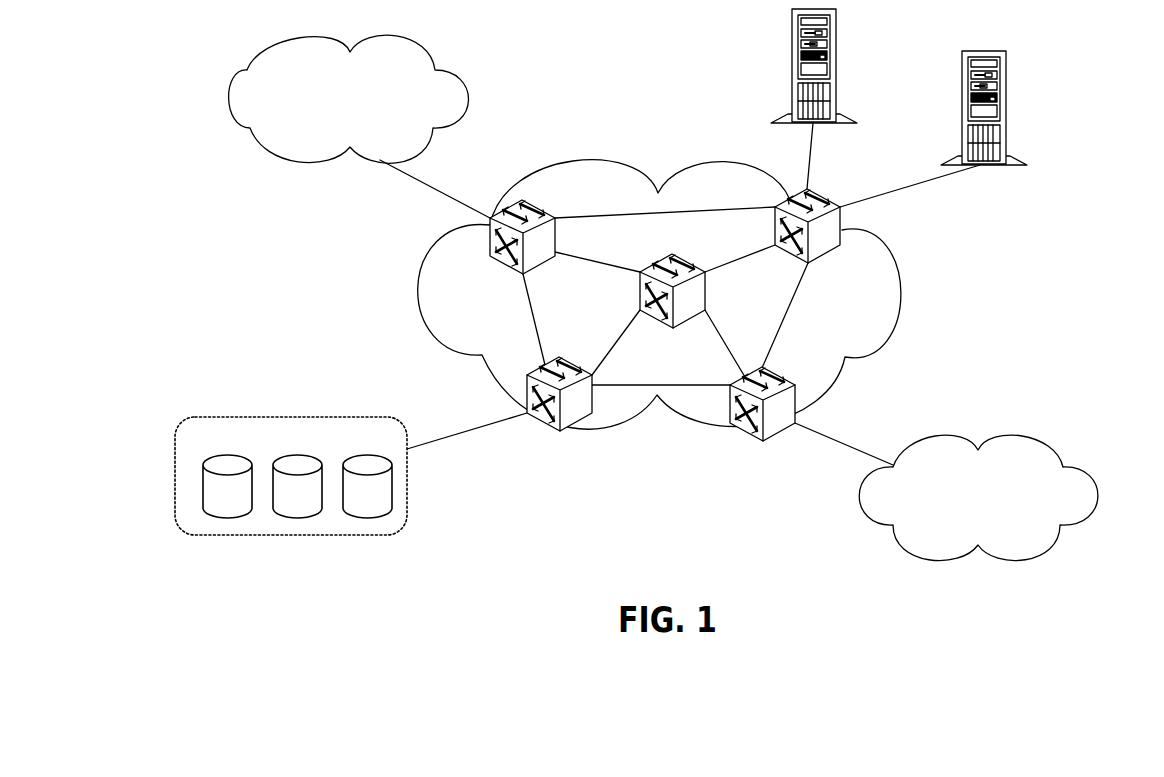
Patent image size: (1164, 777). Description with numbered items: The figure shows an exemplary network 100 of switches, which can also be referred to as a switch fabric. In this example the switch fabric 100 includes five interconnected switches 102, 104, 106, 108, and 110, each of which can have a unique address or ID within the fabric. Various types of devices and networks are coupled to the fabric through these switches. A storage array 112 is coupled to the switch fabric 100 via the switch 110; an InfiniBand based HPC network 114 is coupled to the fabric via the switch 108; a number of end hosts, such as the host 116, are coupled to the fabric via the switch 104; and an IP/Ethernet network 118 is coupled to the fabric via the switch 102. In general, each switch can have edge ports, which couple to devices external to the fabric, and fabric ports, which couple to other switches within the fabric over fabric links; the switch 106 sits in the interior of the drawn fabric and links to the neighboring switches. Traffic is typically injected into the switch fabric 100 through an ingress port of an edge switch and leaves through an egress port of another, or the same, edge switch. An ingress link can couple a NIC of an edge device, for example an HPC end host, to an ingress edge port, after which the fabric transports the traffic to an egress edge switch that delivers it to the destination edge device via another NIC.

The network 100 is at (902, 291).
The switch 102 is at (760, 442).
The switch 104 is at (845, 229).
The switch 106 is at (672, 253).
The switch 108 is at (490, 250).
The switch 110 is at (558, 357).
The storage array 112 is at (387, 535).
The InfiniBand based HPC network 114 is at (232, 98).
The host 116 is at (1028, 160).
The IP/Ethernet network 118 is at (1097, 497).